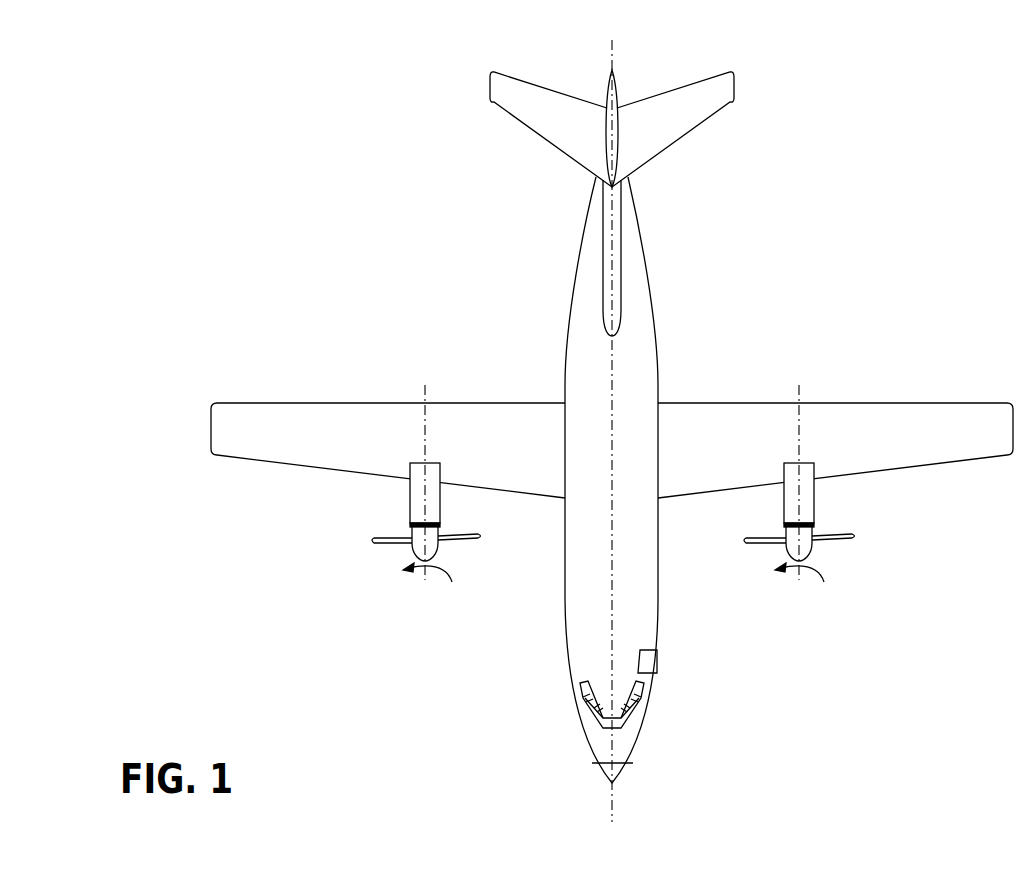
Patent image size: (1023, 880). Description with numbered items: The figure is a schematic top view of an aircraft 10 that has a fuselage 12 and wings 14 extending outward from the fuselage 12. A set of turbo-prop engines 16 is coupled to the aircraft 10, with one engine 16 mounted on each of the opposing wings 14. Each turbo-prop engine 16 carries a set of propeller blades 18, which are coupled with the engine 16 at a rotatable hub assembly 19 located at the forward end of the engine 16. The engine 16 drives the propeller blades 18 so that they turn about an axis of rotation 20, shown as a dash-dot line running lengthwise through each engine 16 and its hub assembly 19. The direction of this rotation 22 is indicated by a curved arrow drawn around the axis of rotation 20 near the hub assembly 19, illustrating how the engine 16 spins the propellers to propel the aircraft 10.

The aircraft 10 is at (612, 431).
The fuselage 12 is at (658, 345).
The wings 14 is at (283, 417).
The turbo-prop engine 16 is at (410, 510).
The propeller blades 18 is at (372, 541).
The rotatable hub assembly 19 is at (422, 545).
The axis of rotation 20 is at (425, 387).
The rotation 22 is at (452, 582).